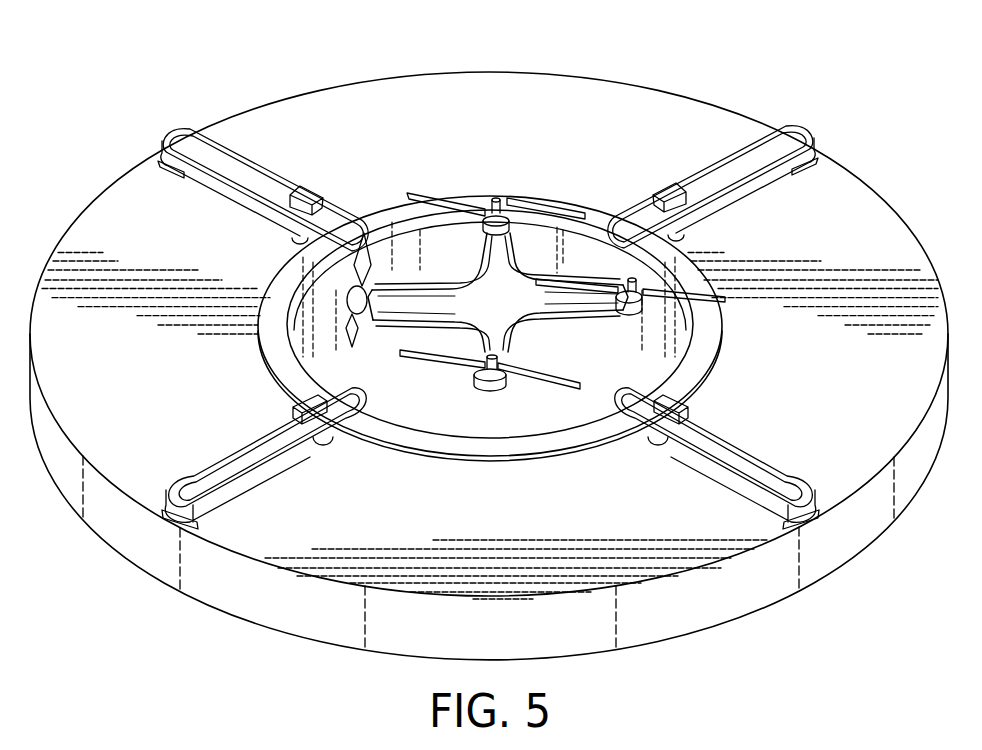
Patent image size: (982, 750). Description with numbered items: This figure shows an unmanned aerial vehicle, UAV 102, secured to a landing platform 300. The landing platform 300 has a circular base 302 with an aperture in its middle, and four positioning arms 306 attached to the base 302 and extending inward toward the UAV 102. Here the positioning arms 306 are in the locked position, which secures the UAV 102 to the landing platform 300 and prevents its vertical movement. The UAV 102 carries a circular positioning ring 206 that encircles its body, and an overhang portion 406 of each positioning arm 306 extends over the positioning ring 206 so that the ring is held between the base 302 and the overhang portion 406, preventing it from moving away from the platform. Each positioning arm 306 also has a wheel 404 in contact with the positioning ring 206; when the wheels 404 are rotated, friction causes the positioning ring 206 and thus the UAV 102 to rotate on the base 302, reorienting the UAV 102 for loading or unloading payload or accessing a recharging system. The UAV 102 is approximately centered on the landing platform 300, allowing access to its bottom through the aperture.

The landing platform 300 is at (723, 51).
The base 302 is at (310, 117).
The positioning arm 306 is at (235, 162).
The positioning ring 206 is at (285, 292).
The overhang portion 406 is at (282, 394).
The wheel 404 is at (641, 442).
The UAV 102 is at (556, 320).